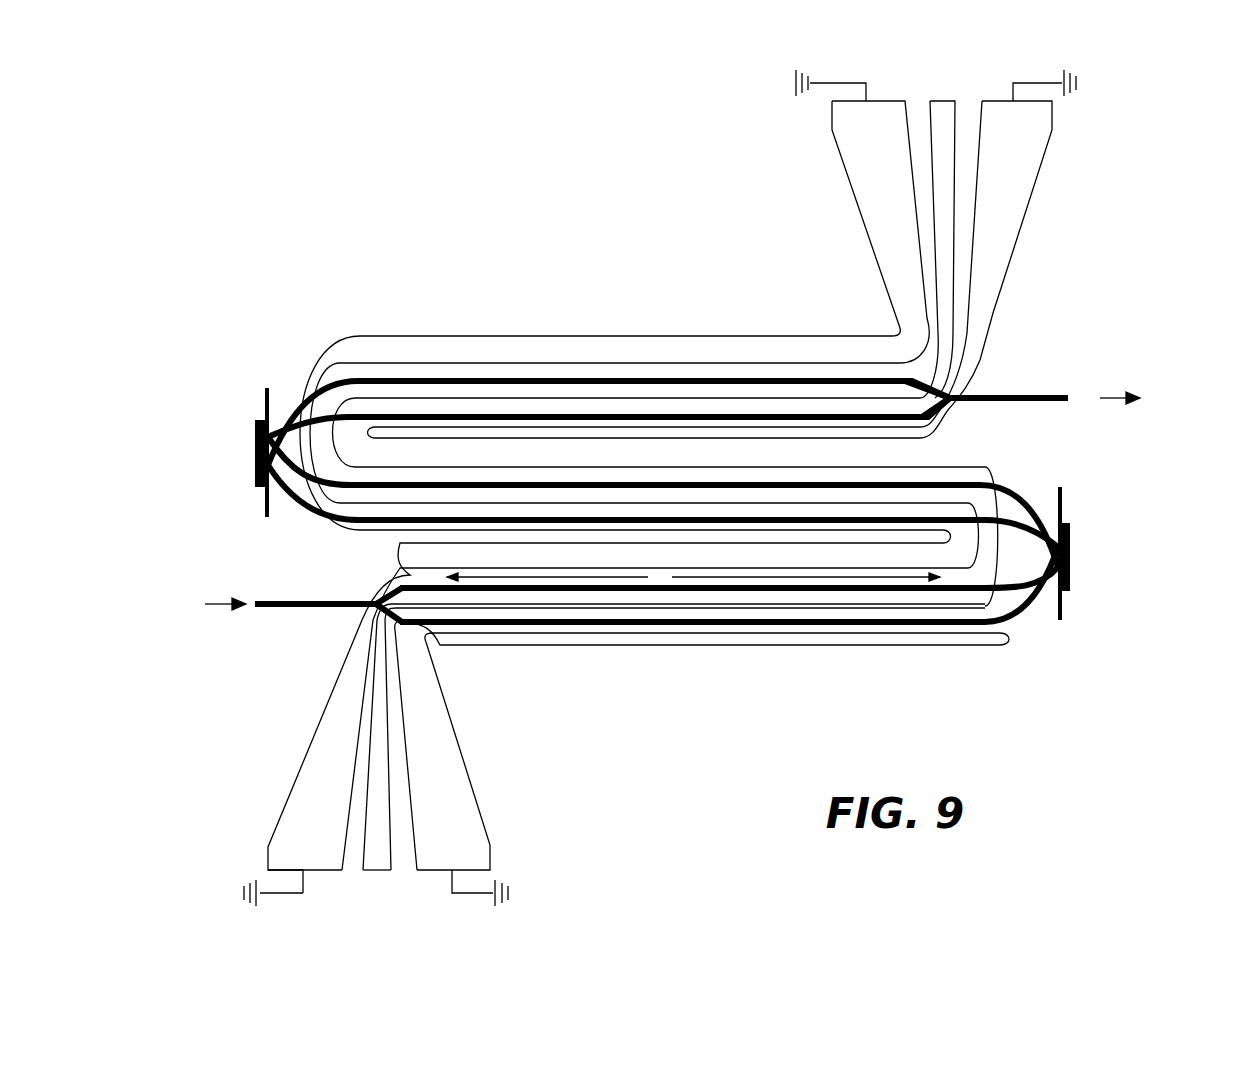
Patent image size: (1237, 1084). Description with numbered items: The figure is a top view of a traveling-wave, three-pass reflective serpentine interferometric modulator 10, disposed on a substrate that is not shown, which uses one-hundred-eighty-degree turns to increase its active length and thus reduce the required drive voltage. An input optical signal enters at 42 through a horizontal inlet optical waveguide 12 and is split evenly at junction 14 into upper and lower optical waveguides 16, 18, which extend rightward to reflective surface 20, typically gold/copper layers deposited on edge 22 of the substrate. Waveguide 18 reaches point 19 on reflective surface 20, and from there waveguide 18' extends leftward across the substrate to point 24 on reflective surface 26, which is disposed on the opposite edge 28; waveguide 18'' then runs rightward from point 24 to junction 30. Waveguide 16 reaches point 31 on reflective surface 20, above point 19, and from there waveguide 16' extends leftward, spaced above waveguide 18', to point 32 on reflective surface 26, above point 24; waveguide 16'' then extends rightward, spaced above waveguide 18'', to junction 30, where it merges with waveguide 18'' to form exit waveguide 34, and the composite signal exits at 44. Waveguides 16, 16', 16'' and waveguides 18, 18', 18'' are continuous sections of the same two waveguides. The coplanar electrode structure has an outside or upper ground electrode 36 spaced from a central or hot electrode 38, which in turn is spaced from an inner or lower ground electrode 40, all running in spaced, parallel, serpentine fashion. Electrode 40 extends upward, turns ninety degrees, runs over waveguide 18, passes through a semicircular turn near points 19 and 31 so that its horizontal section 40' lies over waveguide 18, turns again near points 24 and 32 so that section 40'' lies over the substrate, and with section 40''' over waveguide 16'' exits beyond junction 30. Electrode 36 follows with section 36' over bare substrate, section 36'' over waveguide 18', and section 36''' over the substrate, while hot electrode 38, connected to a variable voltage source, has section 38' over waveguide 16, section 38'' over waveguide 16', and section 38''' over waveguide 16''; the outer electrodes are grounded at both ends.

The interferometric modulator 10 is at (1152, 199).
The inlet optical waveguide 12 is at (330, 598).
The junction 14 is at (345, 615).
The upper optical waveguide 16 is at (371, 577).
The waveguide section 16' is at (636, 468).
The waveguide section 16'' is at (609, 391).
The lower optical waveguide 18 is at (729, 614).
The waveguide section 18' is at (706, 475).
The waveguide section 18'' is at (623, 444).
The point 19 is at (1046, 596).
The reflective surface 20 is at (1072, 552).
The edge 22 is at (1065, 500).
The point 24 is at (282, 490).
The reflective surface 26 is at (256, 452).
The edge 28 is at (262, 393).
The junction 30 is at (980, 390).
The point 31 is at (1042, 502).
The point 32 is at (280, 388).
The exit waveguide 34 is at (1030, 395).
The upper ground electrode 36 is at (594, 724).
The horizontal electrode section 36' is at (595, 636).
The horizontal electrode section 36'' is at (639, 433).
The electrode section 36''' is at (634, 216).
The hot electrode 38 is at (665, 765).
The horizontal electrode section 38' is at (682, 636).
The electrode section 38'' is at (665, 456).
The electrode section 38''' is at (655, 249).
The lower ground electrode 40 is at (697, 763).
The horizontal electrode section 40' is at (775, 656).
The horizontal electrode section 40'' is at (689, 472).
The horizontal electrode section 40''' is at (725, 254).
The input 42 is at (205, 604).
The exit 44 is at (1136, 398).